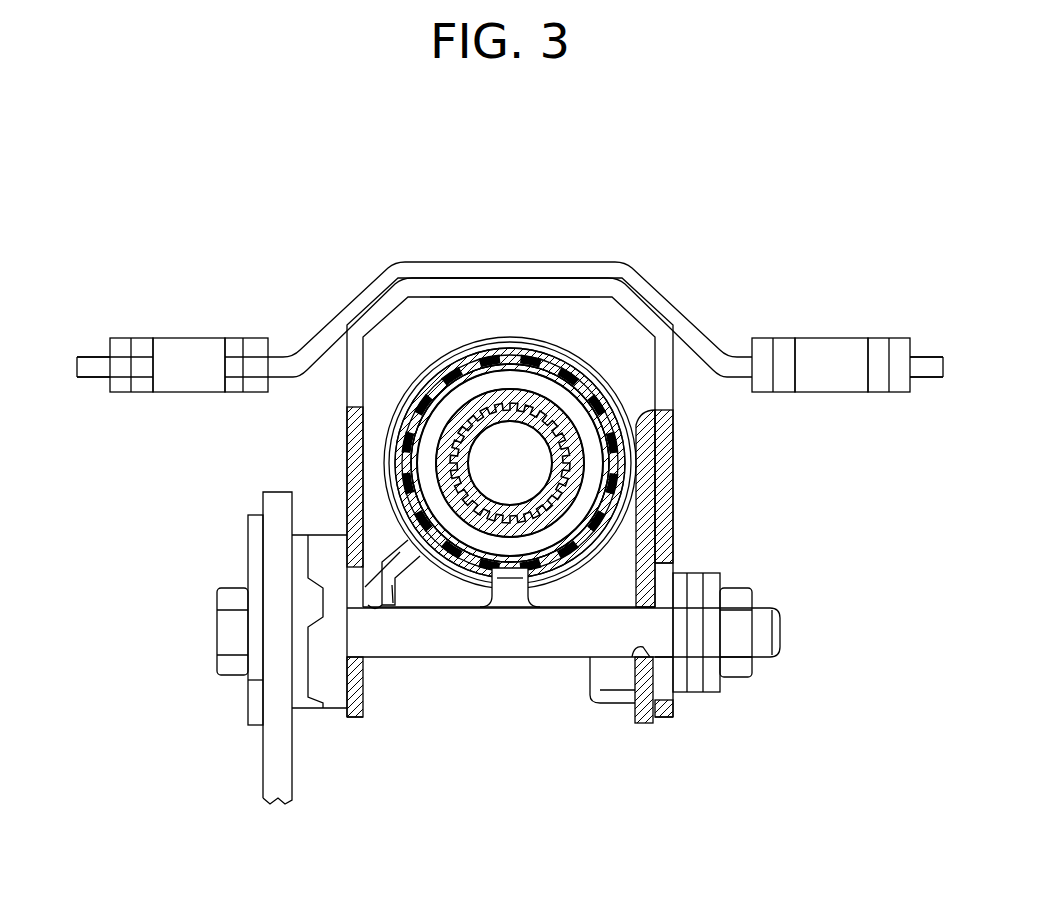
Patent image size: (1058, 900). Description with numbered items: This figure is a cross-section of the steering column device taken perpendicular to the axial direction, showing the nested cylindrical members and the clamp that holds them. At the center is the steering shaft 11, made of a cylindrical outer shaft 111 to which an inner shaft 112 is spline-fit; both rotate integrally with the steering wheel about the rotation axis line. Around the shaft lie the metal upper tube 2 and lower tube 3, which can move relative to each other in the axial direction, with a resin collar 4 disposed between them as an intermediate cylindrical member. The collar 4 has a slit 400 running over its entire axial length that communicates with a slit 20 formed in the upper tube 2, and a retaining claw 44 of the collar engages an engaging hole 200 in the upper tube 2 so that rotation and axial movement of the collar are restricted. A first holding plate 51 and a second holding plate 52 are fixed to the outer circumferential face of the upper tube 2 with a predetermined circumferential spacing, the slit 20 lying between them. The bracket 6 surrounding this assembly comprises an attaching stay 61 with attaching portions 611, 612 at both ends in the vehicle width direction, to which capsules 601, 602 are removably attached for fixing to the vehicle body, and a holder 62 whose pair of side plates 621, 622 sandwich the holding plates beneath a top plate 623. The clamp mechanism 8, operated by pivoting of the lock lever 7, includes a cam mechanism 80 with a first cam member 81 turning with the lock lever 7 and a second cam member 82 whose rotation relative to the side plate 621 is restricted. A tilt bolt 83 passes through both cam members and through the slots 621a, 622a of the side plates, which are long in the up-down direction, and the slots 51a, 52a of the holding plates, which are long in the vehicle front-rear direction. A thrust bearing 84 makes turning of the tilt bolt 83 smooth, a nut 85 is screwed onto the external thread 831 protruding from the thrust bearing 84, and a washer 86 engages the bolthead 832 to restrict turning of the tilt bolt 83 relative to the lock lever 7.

The upper tube 2 is at (417, 382).
The lower tube 3 is at (448, 371).
The collar 4 is at (465, 362).
The bracket 6 is at (672, 250).
The lock lever 7 is at (263, 738).
The clamp mechanism 8 is at (797, 593).
The steering shaft 11 is at (568, 394).
The slit 20 is at (510, 598).
The retaining claw 44 is at (500, 356).
The first holding plate 51 is at (372, 520).
The slot 51a is at (386, 558).
The second holding plate 52 is at (645, 468).
The slot 52a is at (643, 648).
The attaching stay 61 is at (445, 261).
The holder 62 is at (557, 281).
The cam mechanism 80 is at (145, 500).
The first cam member 81 is at (297, 587).
The second cam member 82 is at (318, 565).
The tilt bolt 83 is at (453, 638).
The thrust bearing 84 is at (694, 573).
The nut 85 is at (740, 678).
The washer 86 is at (247, 681).
The outer shaft 111 is at (550, 396).
The inner shaft 112 is at (529, 410).
The engaging hole 200 is at (497, 346).
The slit 400 is at (502, 584).
The capsule 601 is at (196, 338).
The capsule 602 is at (831, 338).
The attaching portion 611 is at (90, 364).
The attaching portion 612 is at (927, 363).
The side plate 621 is at (352, 447).
The slot 621a is at (355, 682).
The side plate 622 is at (668, 484).
The slot 622a is at (665, 583).
The top plate 623 is at (480, 292).
The external thread 831 is at (773, 645).
The bolthead 832 is at (226, 626).